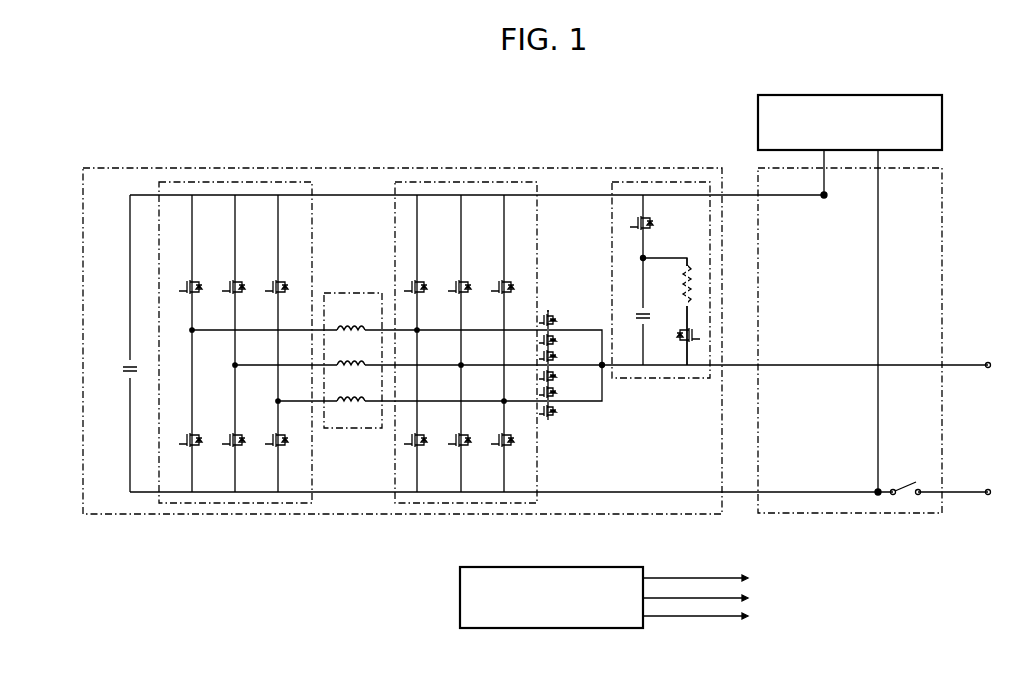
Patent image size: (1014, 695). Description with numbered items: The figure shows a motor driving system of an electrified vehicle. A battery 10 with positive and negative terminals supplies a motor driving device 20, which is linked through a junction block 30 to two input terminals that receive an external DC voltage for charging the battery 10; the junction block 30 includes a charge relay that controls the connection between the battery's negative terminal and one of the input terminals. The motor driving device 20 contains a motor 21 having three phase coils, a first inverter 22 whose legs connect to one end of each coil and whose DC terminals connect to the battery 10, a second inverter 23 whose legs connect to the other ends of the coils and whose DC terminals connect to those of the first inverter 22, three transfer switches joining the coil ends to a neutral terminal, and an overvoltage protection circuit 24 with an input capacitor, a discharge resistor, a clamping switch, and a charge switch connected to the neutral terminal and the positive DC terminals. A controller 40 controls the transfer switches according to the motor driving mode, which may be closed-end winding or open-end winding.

The battery 10 is at (945, 105).
The motor driving device 20 is at (600, 168).
The motor 21 is at (345, 428).
The first inverter 22 is at (285, 503).
The second inverter 23 is at (505, 503).
The overvoltage protection circuit 24 is at (672, 378).
The junction block 30 is at (881, 331).
The controller 40 is at (630, 567).